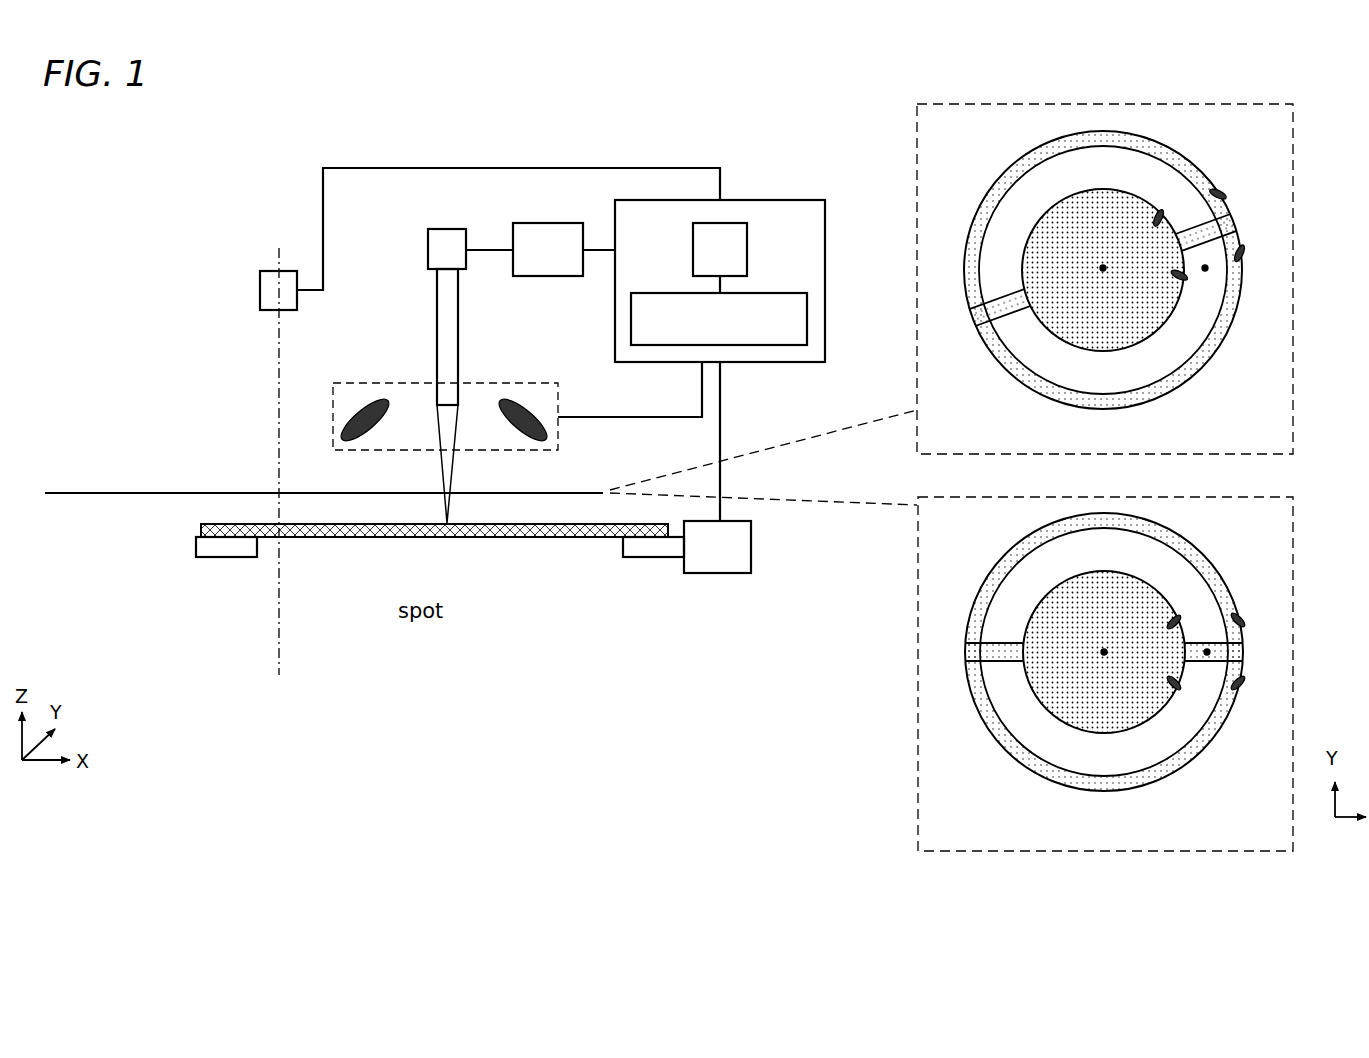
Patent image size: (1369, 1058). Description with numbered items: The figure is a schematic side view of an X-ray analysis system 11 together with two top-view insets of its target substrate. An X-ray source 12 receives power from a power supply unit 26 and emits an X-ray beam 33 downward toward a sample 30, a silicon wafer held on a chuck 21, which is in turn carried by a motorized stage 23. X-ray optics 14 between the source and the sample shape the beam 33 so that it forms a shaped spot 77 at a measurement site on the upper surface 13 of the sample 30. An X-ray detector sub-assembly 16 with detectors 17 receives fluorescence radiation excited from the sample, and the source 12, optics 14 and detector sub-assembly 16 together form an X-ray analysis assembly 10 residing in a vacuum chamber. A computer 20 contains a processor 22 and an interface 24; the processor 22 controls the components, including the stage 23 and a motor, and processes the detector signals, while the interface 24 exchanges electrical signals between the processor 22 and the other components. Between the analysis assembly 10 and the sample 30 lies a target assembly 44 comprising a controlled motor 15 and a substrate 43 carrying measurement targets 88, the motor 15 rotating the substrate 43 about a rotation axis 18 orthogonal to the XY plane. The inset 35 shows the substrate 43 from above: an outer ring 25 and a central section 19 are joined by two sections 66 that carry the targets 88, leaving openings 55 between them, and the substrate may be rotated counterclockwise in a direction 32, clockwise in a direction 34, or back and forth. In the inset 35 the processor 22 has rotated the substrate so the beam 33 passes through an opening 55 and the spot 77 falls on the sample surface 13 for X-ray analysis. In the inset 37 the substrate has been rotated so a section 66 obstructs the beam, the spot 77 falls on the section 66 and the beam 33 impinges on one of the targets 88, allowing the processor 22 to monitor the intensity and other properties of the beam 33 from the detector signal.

The X-ray analysis assembly 10 is at (264, 237).
The X-ray analysis system 11 is at (142, 290).
The X-ray source 12 is at (428, 245).
The upper surface 13 is at (354, 524).
The X-ray optics 14 is at (437, 302).
The controlled motor 15 is at (260, 289).
The X-ray detector sub-assembly 16 is at (335, 385).
The detectors 17 is at (382, 404).
The rotation axis 18 is at (279, 408).
The section 19 is at (1103, 461).
The computer 20 is at (768, 362).
The chuck 21 is at (225, 557).
The processor 22 is at (650, 345).
The stage 23 is at (722, 573).
The interface 24 is at (734, 223).
The outer ring 25 is at (1012, 396).
The power supply unit 26 is at (548, 276).
The sample 30 is at (201, 527).
The direction 32 is at (1205, 141).
The X-ray beam 33 is at (442, 478).
The direction 34 is at (1237, 185).
The inset 35 is at (946, 104).
The inset 37 is at (958, 851).
The substrate 43 is at (93, 491).
The target assembly 44 is at (92, 398).
The openings 55 is at (1083, 467).
The sections 66 is at (1194, 233).
The shaped spot 77 is at (447, 523).
The measurement targets 88 is at (453, 487).